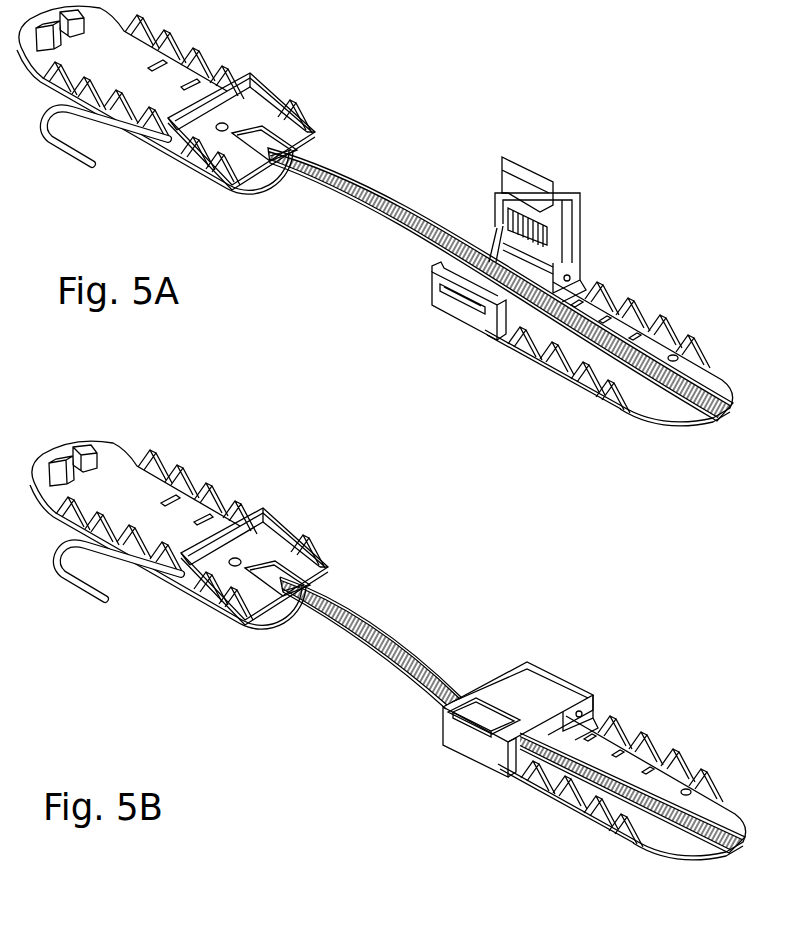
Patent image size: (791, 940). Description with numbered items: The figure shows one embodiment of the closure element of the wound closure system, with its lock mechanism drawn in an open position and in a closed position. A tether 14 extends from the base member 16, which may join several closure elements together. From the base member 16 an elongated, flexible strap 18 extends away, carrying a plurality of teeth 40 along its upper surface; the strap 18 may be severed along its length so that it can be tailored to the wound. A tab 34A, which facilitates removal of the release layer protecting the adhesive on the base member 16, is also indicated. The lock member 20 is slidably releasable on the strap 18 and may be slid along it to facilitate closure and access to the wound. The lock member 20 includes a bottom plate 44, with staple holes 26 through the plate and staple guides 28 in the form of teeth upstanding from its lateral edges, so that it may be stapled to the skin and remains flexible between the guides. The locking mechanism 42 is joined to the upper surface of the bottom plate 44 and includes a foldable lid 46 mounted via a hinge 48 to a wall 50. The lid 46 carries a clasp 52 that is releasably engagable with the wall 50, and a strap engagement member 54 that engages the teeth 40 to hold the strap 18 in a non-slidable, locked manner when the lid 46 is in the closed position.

In FIG. 5A, the tether 14 is at (72, 152).
In FIG. 5B, the tether 14 is at (77, 582).
In FIG. 5A, the base member 16 is at (166, 131).
In FIG. 5B, the base member 16 is at (179, 569).
In FIG. 5A, the strap 18 is at (499, 281).
In FIG. 5B, the strap 18 is at (512, 713).
In FIG. 5A, the lock member 20 is at (630, 374).
In FIG. 5B, the lock member 20 is at (622, 817).
In FIG. 5A, the staple holes 26 is at (650, 304).
In FIG. 5A, the staple guides 28 is at (675, 320).
In FIG. 5A, the tab 34A is at (278, 185).
In FIG. 5B, the tab 34A is at (288, 615).
In FIG. 5A, the teeth 40 is at (373, 190).
In FIG. 5B, the teeth 40 is at (418, 623).
In FIG. 5A, the locking mechanism 42 is at (512, 251).
In FIG. 5B, the locking mechanism 42 is at (528, 703).
In FIG. 5A, the bottom plate 44 is at (668, 410).
In FIG. 5B, the bottom plate 44 is at (672, 840).
In FIG. 5A, the foldable lid 46 is at (571, 199).
In FIG. 5B, the foldable lid 46 is at (498, 690).
In FIG. 5A, the hinge 48 is at (570, 277).
In FIG. 5B, the hinge 48 is at (582, 715).
In FIG. 5A, the wall 50 is at (453, 310).
In FIG. 5B, the wall 50 is at (500, 757).
In FIG. 5A, the clasp 52 is at (525, 188).
In FIG. 5B, the clasp 52 is at (477, 727).
In FIG. 5A, the strap engagement member 54 is at (553, 217).